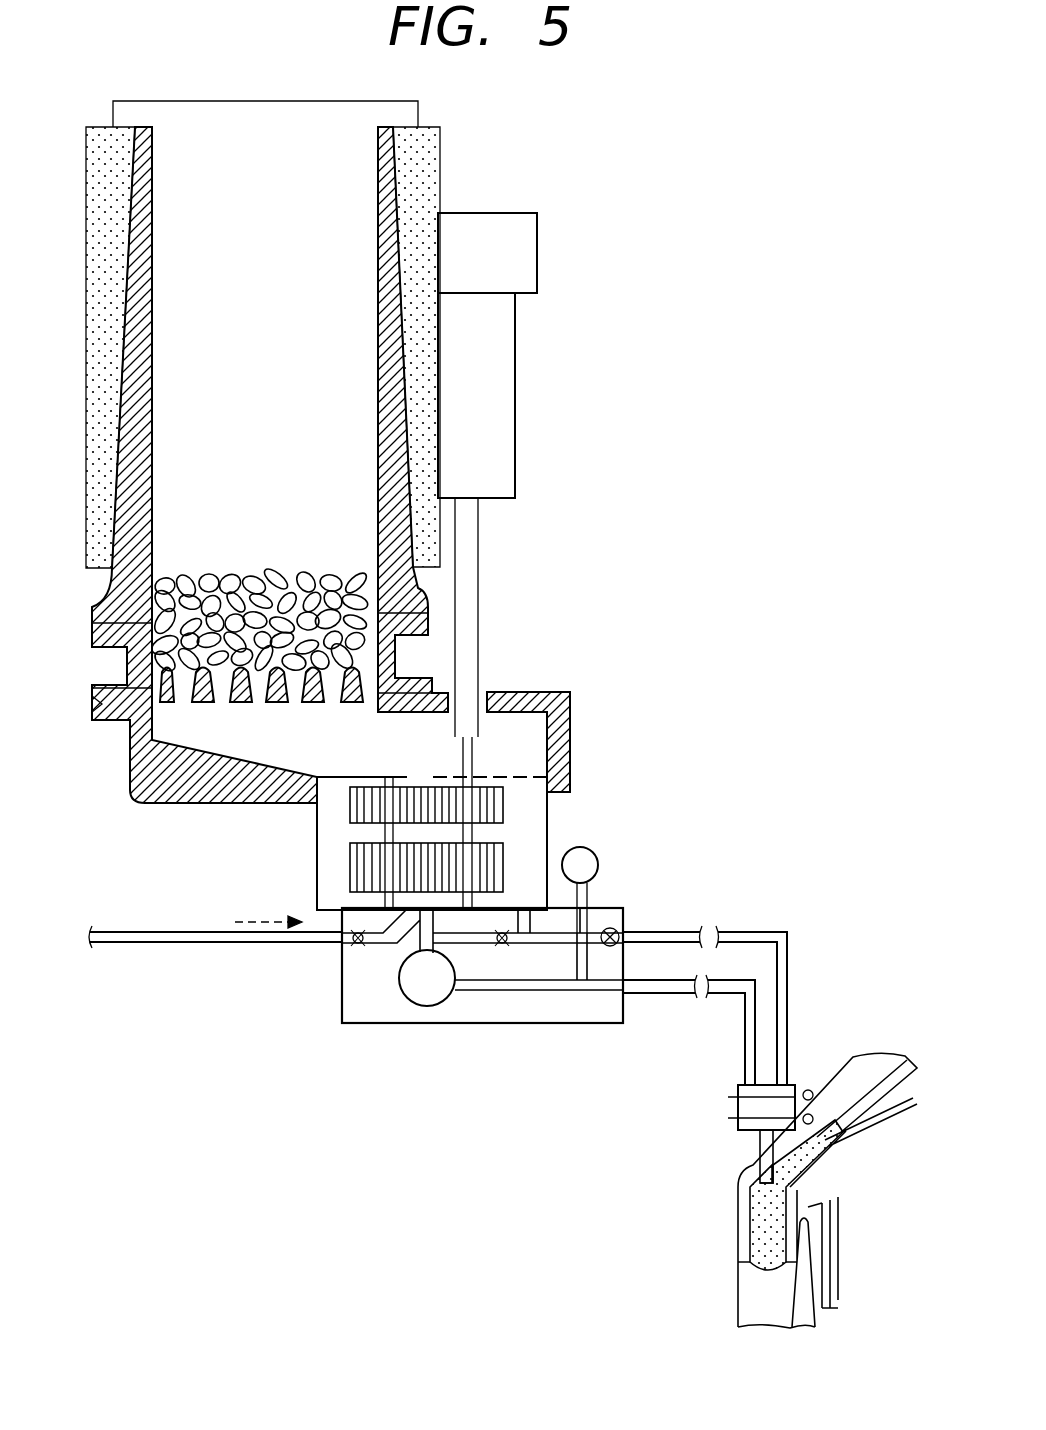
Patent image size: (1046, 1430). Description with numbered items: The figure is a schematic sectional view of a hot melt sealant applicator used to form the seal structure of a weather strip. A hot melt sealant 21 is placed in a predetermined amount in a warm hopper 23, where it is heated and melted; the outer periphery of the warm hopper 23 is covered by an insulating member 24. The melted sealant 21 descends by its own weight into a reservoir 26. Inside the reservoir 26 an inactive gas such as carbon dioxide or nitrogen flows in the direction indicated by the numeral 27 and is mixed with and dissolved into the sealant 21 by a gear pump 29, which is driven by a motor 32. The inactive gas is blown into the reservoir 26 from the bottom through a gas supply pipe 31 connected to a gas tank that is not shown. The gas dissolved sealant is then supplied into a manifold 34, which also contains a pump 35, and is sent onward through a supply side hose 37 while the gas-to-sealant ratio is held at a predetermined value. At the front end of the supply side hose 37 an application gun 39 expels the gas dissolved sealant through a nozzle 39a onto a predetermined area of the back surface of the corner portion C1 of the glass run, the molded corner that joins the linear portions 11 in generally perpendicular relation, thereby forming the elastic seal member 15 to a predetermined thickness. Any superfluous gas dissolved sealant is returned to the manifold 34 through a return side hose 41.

The linear portions 11 is at (897, 1125).
The elastic seal member 15 is at (758, 1210).
The hot melt sealant 21 is at (182, 580).
The warm hopper 23 is at (142, 308).
The insulating member 24 is at (110, 233).
The reservoir 26 is at (548, 815).
The gas flow direction 27 is at (258, 920).
The gear pump 29 is at (505, 776).
The gas supply pipe 31 is at (205, 944).
The motor 32 is at (488, 330).
The manifold 34 is at (540, 1023).
The pump 35 is at (428, 990).
The supply side hose 37 is at (667, 995).
The application gun 39 is at (790, 1083).
The nozzle 39a is at (760, 1147).
The return side hose 41 is at (675, 932).
The corner portion C1 is at (808, 1207).